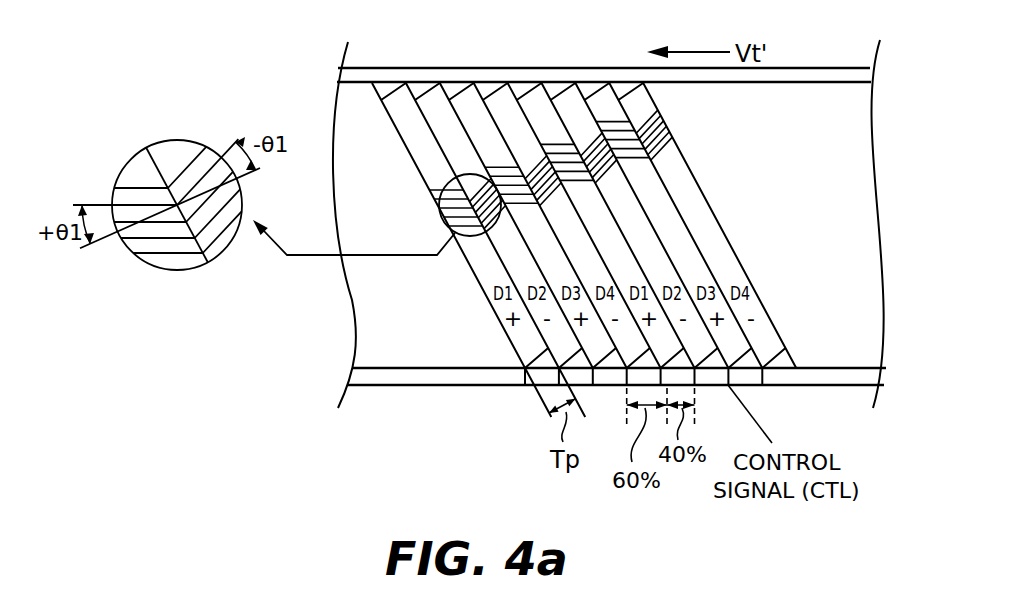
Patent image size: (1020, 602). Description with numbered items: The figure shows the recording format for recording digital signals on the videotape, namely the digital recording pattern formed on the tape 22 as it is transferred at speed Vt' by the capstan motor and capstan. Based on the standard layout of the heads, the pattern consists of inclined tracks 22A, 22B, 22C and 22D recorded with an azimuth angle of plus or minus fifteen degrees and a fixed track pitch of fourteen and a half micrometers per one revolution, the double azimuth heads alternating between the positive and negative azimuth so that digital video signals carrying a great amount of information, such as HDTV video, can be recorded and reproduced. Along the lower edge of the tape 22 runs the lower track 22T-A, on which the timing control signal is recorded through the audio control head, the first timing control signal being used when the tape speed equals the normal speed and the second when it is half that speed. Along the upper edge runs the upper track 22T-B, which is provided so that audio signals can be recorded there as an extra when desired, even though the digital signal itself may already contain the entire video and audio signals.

The tape 22 is at (810, 103).
The upper track 22T-B is at (377, 75).
The lower track 22T-A is at (397, 378).
The inclined track 22A is at (394, 79).
The inclined track 22B is at (431, 80).
The inclined track 22C is at (464, 83).
The inclined track 22D is at (501, 88).